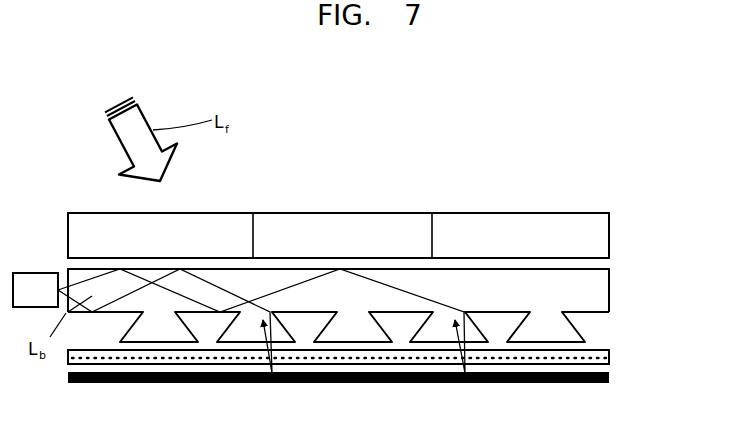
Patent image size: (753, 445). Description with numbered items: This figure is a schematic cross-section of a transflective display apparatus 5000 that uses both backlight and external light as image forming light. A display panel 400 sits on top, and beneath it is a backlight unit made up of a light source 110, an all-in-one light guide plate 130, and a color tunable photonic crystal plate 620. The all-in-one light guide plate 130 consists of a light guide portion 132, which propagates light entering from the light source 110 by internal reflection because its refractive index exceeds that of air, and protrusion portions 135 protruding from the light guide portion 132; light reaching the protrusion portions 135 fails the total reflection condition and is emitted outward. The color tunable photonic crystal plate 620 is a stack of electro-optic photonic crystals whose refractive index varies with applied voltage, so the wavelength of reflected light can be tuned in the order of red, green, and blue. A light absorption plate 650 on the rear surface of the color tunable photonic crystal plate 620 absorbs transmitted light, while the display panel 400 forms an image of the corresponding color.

The transflective display apparatus 5000 is at (574, 166).
The display panel 400 is at (609, 239).
The light source 110 is at (33, 278).
The all-in-one light guide plate 130 is at (386, 321).
The light guide portion 132 is at (602, 292).
The protrusion portions 135 is at (562, 328).
The color tunable photonic crystal plate 620 is at (609, 358).
The light absorption plate 650 is at (609, 382).